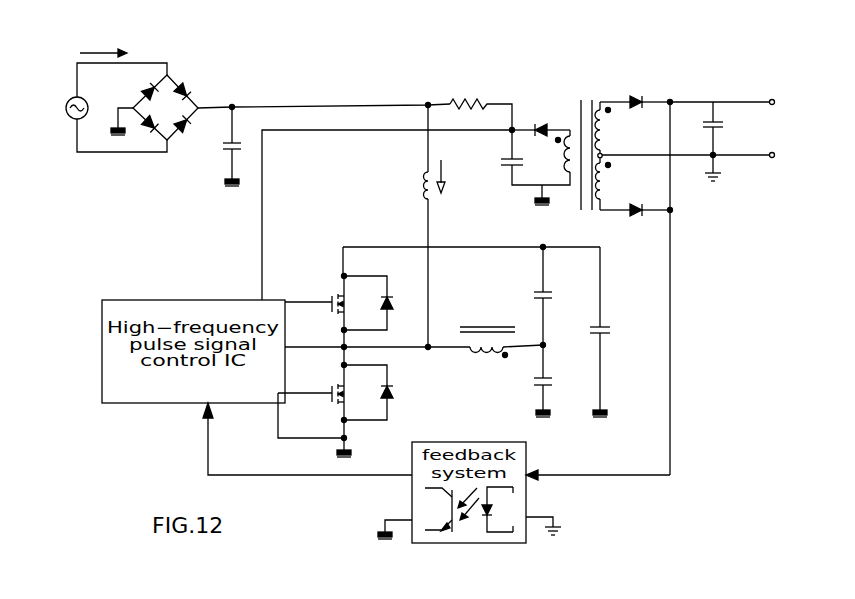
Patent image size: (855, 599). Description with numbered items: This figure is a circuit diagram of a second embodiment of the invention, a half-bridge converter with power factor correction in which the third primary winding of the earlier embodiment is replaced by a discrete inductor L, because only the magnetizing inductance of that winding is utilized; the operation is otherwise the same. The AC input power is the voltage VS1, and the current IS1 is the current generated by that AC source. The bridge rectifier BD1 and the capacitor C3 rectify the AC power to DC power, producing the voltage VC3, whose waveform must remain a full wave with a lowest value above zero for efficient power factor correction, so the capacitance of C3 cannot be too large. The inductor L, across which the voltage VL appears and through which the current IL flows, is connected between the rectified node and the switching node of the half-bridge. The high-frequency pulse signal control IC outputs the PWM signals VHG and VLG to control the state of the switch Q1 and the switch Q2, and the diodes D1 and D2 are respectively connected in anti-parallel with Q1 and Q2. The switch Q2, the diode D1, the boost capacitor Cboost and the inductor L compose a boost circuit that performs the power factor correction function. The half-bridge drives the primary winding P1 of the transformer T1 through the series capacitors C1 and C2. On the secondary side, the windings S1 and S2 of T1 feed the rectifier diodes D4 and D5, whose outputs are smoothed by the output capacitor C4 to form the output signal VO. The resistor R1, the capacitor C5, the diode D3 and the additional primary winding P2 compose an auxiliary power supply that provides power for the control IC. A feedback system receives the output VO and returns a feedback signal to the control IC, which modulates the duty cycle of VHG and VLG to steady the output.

The AC input power voltage VS1 is at (97, 107).
The input current IS1 is at (98, 47).
The bridge rectifier BD1 is at (163, 91).
The rectified voltage across capacitor C3 VC3 is at (324, 95).
The capacitor C3 is at (215, 146).
The resistor R1 is at (469, 100).
The inductor L is at (433, 198).
The inductor voltage VL is at (400, 189).
The inductor current IL is at (450, 176).
The capacitor C5 is at (521, 167).
The diode D3 is at (541, 117).
The primary winding P2 is at (549, 151).
The transformer T1 is at (528, 205).
The secondary winding S1 is at (613, 130).
The secondary winding S2 is at (614, 184).
The output rectifier diode D4 is at (635, 91).
The output rectifier diode D5 is at (635, 224).
The output capacitor C4 is at (709, 141).
The output signal VO is at (703, 128).
The switch Q1 is at (316, 290).
The diode D1 is at (382, 303).
The PWM signal VHG is at (305, 327).
The switch Q2 is at (312, 393).
The diode D2 is at (382, 392).
The PWM signal VLG is at (311, 416).
The primary winding P1 is at (506, 362).
The capacitor C1 is at (551, 297).
The capacitor C2 is at (551, 381).
The boost capacitor Cboost is at (625, 332).